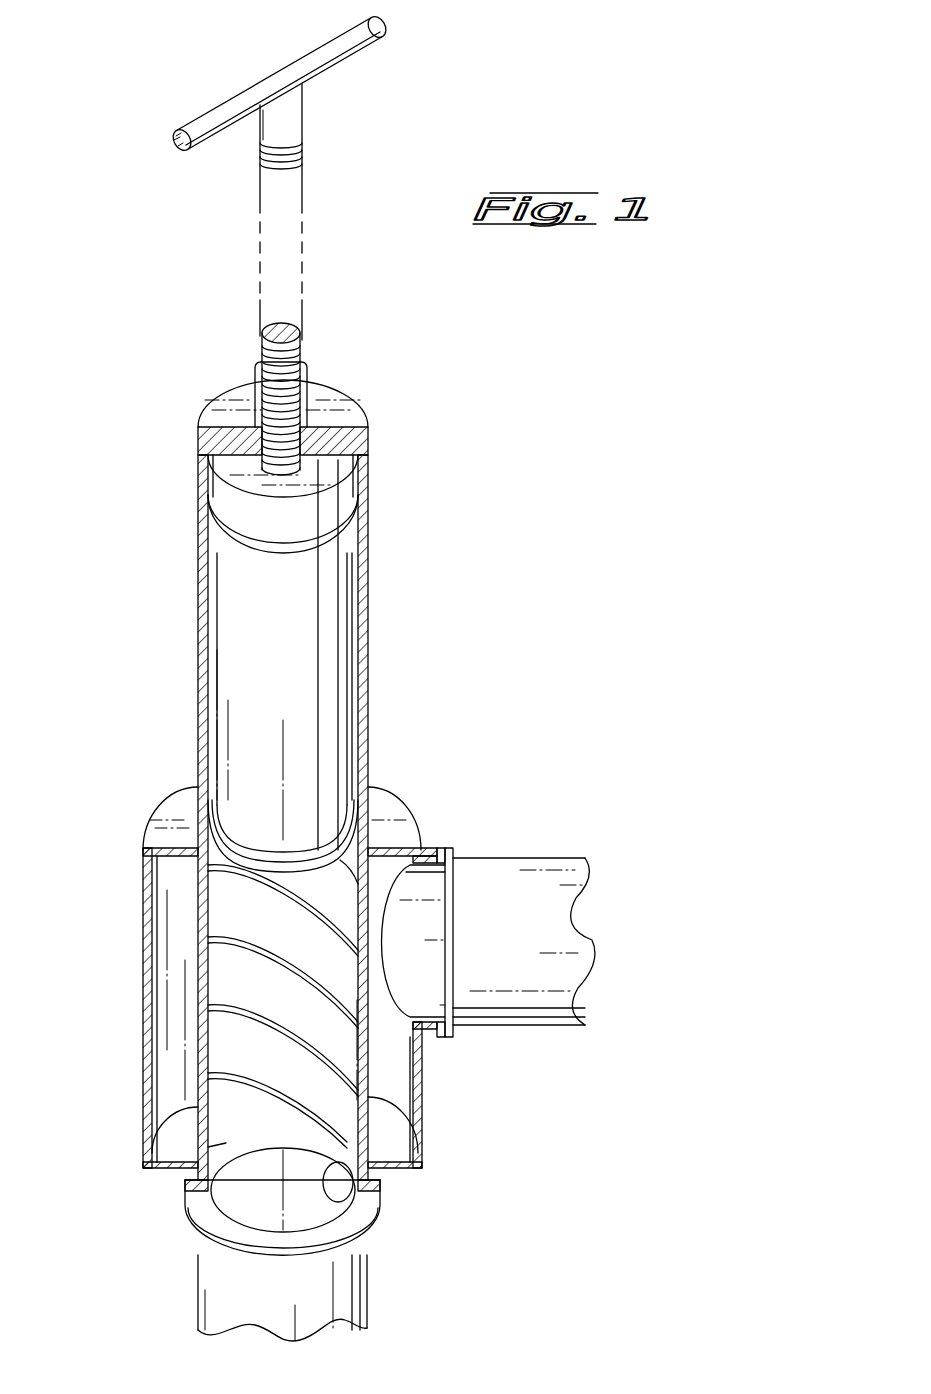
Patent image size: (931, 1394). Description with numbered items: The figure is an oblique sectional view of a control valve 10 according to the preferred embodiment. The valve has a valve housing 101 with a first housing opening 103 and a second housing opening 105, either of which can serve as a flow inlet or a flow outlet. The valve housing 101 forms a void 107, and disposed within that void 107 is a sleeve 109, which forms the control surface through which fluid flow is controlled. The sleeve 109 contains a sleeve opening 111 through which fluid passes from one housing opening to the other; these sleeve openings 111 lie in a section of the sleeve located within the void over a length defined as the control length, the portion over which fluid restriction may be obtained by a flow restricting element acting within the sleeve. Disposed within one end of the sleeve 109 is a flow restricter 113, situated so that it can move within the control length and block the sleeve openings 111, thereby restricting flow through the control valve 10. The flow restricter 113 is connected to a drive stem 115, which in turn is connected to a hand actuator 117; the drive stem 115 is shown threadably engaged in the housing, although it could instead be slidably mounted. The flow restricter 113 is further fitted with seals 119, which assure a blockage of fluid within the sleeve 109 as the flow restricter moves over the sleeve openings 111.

The control valve 10 is at (140, 383).
The valve housing 101 is at (392, 826).
The first housing opening 103 is at (423, 985).
The second housing opening 105 is at (357, 1210).
The void 107 is at (182, 920).
The sleeve 109 is at (198, 1028).
The sleeve opening 111 is at (368, 1093).
The flow restricter 113 is at (252, 636).
The drive stem 115 is at (302, 348).
The hand actuator 117 is at (227, 107).
The seals 119 is at (357, 504).